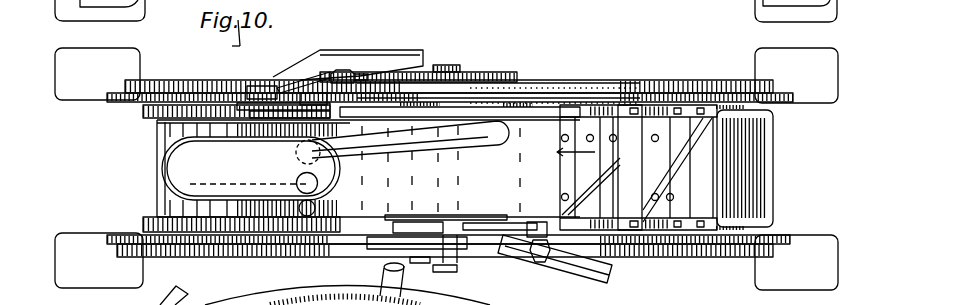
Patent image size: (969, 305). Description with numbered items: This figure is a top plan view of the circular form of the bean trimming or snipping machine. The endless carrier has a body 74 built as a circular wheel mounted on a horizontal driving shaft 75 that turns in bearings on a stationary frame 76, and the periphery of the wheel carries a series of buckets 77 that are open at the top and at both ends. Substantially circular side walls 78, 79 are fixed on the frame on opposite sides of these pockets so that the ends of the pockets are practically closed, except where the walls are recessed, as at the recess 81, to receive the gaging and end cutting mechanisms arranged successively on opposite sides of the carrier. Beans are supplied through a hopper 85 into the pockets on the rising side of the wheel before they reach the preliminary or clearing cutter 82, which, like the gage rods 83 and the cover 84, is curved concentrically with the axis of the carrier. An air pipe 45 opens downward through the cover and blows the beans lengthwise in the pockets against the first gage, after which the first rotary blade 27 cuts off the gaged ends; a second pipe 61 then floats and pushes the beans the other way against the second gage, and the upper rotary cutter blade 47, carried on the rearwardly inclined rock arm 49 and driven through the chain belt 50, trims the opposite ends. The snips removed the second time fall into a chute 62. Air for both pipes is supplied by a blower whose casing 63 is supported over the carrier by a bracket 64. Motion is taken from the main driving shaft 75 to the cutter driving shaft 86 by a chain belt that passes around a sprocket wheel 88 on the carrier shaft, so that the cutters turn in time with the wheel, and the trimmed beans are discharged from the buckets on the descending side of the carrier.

The upper rotatable blade 27 is at (462, 222).
The air pipe 45 is at (488, 138).
The upper rotary cutter blade 47 is at (233, 104).
The rock arm 49 is at (278, 90).
The chain belt 50 is at (310, 95).
The pipe or conduit 61 is at (315, 207).
The chute 62 is at (363, 53).
The blower casing 63 is at (251, 168).
The bracket 64 is at (158, 295).
The carrier body 74 is at (570, 118).
The driving shaft 75 is at (452, 65).
The stationary frame 76 is at (683, 92).
The buckets 77 is at (652, 127).
The side wall 78 is at (185, 107).
The side wall 79 is at (147, 220).
The recess 81 is at (410, 226).
The preliminary or clearing cutter 82 is at (600, 182).
The gage rods 83 is at (322, 154).
The cover 84 is at (533, 108).
The hopper 85 is at (770, 163).
The cutter driving shaft 86 is at (408, 72).
The sprocket wheel 88 is at (505, 72).